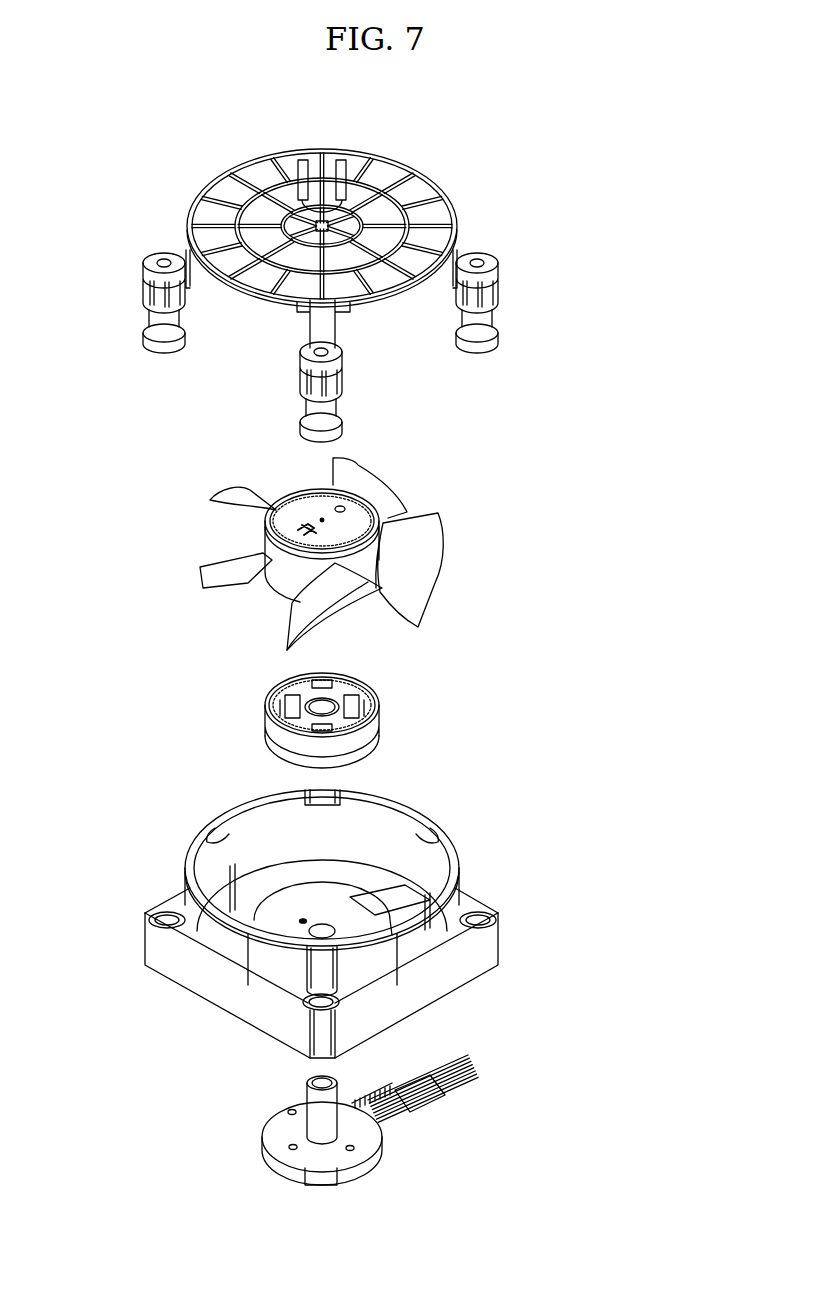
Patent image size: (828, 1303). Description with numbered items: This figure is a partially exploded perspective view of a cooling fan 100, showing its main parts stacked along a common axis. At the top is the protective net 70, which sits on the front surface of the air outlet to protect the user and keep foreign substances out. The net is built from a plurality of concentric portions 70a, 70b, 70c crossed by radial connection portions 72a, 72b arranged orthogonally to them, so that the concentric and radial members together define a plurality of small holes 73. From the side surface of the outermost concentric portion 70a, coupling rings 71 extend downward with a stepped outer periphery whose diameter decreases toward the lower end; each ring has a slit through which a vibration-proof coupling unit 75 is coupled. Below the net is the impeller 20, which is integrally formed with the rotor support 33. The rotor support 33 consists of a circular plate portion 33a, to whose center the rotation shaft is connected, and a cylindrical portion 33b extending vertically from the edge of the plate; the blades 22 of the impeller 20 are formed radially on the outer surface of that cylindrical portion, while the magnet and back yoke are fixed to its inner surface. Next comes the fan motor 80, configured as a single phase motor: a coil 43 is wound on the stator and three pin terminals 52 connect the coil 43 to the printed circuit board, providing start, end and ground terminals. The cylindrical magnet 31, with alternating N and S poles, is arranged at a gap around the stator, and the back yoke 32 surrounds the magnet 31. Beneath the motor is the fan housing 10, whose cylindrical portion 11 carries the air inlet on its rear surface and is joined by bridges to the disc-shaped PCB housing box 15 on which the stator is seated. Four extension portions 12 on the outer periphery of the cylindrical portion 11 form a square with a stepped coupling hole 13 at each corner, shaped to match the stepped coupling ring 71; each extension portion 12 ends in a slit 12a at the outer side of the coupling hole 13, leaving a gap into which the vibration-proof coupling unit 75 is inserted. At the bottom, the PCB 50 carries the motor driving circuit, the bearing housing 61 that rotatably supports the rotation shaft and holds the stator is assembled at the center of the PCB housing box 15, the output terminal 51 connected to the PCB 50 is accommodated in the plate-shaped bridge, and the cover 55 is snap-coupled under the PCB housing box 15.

The cooling fan 100 is at (600, 186).
The protective net 70 is at (448, 168).
The outermost concentric portion 70a is at (186, 209).
The concentric portion 70b is at (273, 180).
The concentric portion 70c is at (273, 217).
The radial connection portion 72a is at (403, 167).
The radial connection portion 72b is at (420, 197).
The small hole 73 is at (263, 283).
The coupling ring 71 is at (145, 282).
The vibration-proof coupling unit 75 is at (160, 320).
The impeller 20 is at (438, 484).
The rotor support 33 is at (122, 500).
The circular plate portion 33a is at (275, 528).
The cylindrical portion 33b is at (262, 558).
The blade 22 is at (425, 555).
The fan motor 80 is at (405, 699).
The pin terminal 52 is at (295, 675).
The coil 43 is at (273, 693).
The magnet 31 is at (268, 715).
The back yoke 32 is at (272, 745).
The fan housing 10 is at (485, 842).
The PCB housing box 15 is at (283, 917).
The cylindrical portion 11 is at (197, 923).
The coupling hole 13 is at (318, 1010).
The PCB 50 is at (275, 1120).
The cover 55 is at (270, 1163).
The bearing housing 61 is at (313, 1102).
The output terminal 51 is at (477, 1073).
The extension portion 12 is at (423, 1098).
The slit 12a is at (393, 1122).